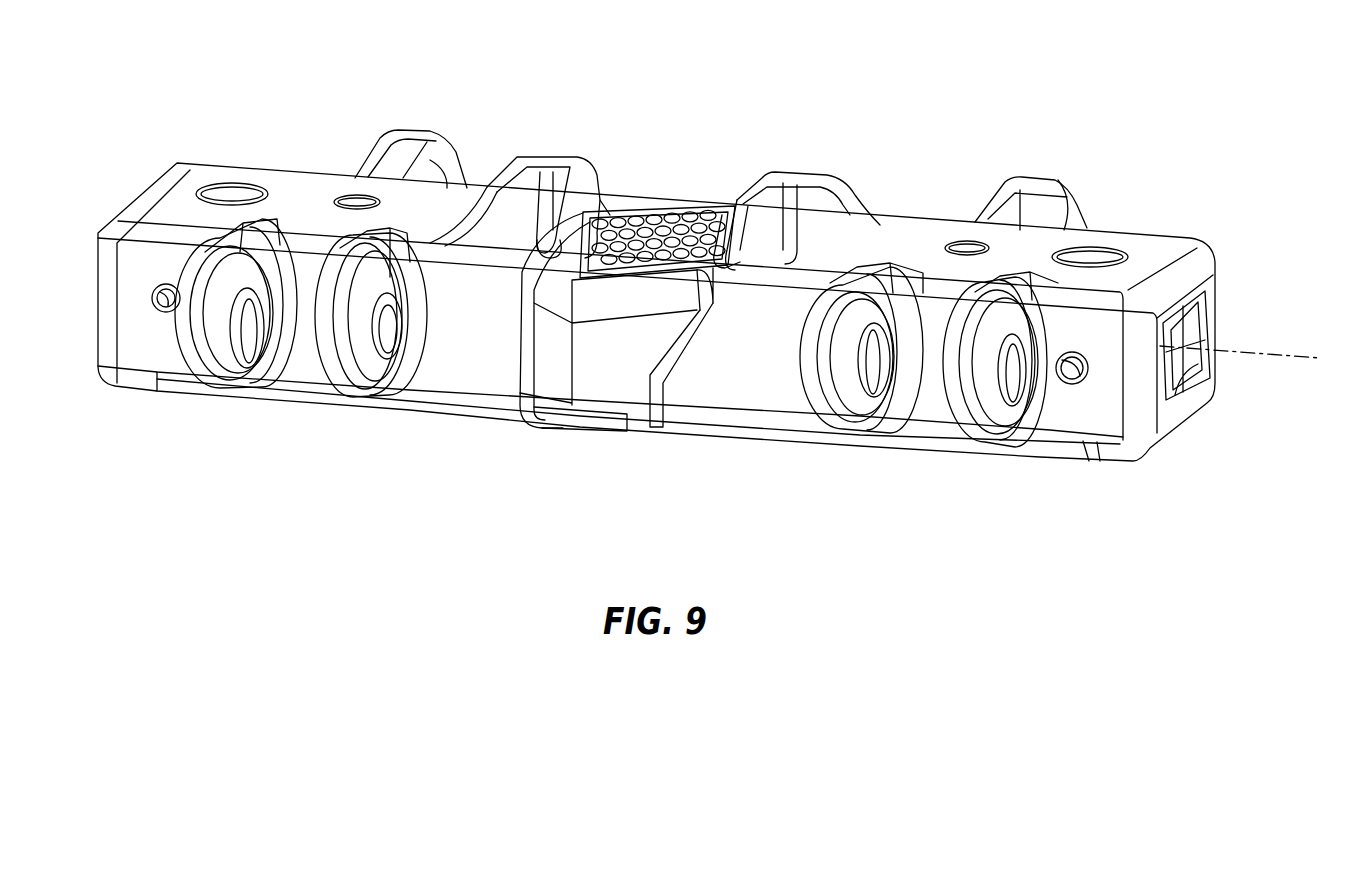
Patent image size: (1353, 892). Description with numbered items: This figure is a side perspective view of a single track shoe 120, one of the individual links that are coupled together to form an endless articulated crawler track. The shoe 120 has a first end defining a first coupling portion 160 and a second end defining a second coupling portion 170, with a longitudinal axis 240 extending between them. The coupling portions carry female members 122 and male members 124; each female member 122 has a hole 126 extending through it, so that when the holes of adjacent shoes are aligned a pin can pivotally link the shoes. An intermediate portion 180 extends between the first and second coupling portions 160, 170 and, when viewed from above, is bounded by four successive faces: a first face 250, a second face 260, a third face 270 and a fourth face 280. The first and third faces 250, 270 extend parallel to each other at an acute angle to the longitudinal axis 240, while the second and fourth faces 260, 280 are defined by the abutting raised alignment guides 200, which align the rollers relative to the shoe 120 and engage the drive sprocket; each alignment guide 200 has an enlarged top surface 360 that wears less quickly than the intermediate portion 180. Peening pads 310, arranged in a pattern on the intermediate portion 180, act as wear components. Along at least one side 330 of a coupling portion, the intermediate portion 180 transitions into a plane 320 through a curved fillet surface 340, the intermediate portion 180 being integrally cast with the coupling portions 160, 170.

The shoe 120 is at (697, 506).
The female member 122 is at (193, 350).
The male member 124 is at (409, 138).
The hole 126 is at (267, 350).
The first coupling portion 160 is at (948, 395).
The second coupling portion 170 is at (380, 328).
The intermediate portion 180 is at (567, 422).
The alignment guide 200 is at (538, 163).
The longitudinal axis 240 is at (1273, 350).
The first face 250 is at (603, 367).
The second face 260 is at (593, 188).
The third face 270 is at (670, 207).
The fourth face 280 is at (718, 200).
The peening pad 310 is at (650, 207).
The plane 320 is at (740, 367).
The side 330 is at (780, 292).
The curved fillet surface 340 is at (695, 343).
The top surface 360 is at (523, 170).